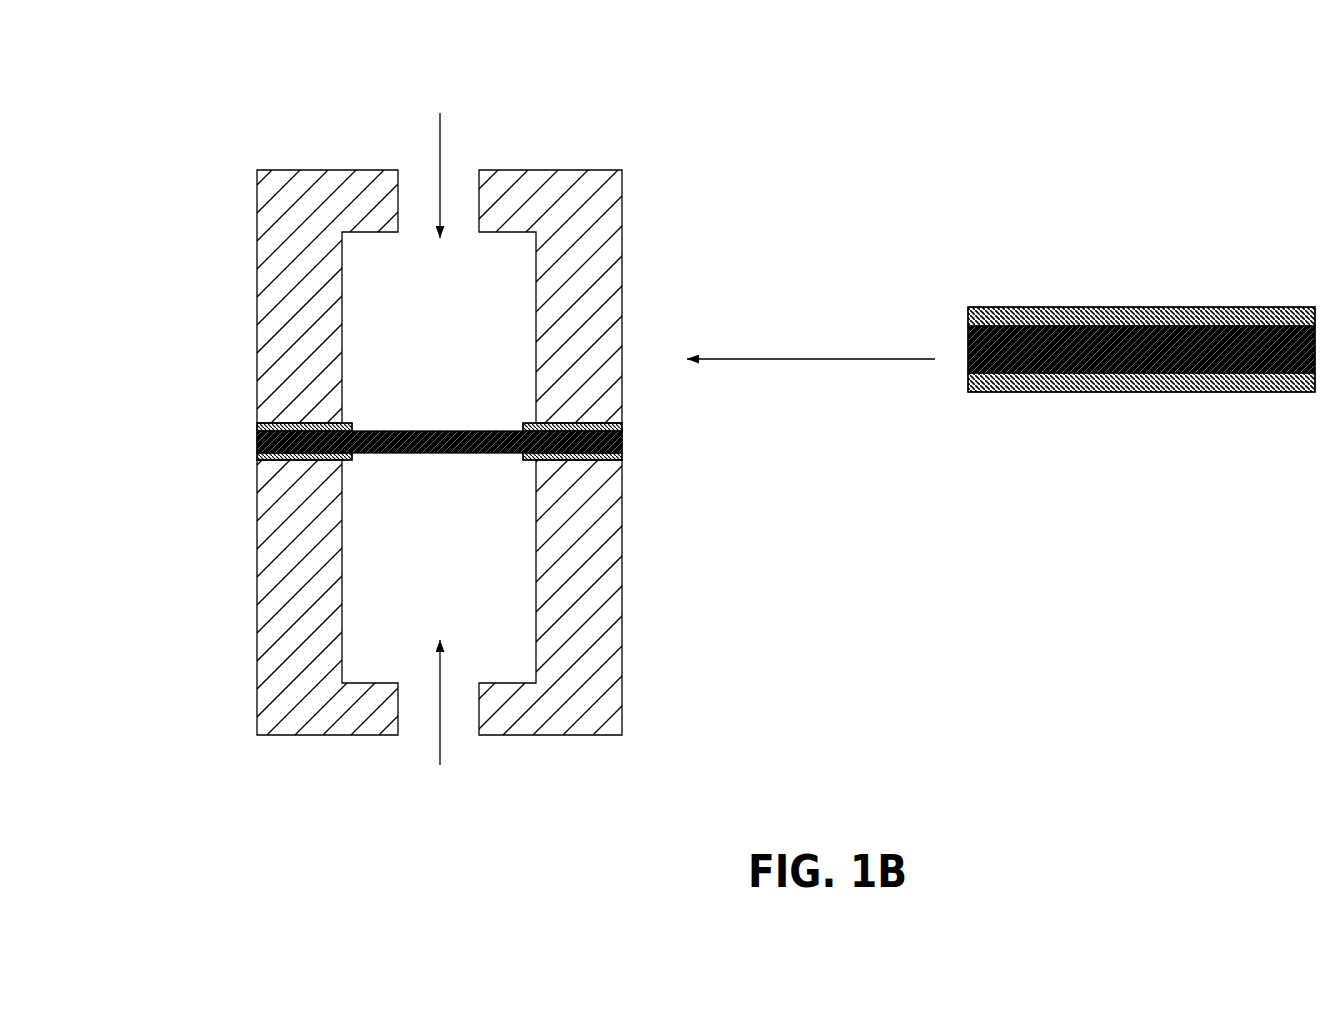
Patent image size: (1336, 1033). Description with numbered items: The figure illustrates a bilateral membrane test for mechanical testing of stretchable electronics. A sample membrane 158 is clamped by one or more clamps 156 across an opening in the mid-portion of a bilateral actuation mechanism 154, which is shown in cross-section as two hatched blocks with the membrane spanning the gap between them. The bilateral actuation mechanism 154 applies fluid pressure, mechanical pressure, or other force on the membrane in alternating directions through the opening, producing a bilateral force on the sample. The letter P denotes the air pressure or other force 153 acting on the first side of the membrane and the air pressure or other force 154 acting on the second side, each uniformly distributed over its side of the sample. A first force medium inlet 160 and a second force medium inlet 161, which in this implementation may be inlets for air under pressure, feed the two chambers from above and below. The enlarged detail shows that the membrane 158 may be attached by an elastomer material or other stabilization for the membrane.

The air pressure or other force on a first side of the membrane 153 is at (467, 283).
The bilateral actuation mechanism 154 is at (688, 647).
The clamps 156 is at (287, 463).
The membrane 158 is at (457, 415).
The first force medium inlet 160 is at (435, 134).
The second force medium inlet 161 is at (436, 745).